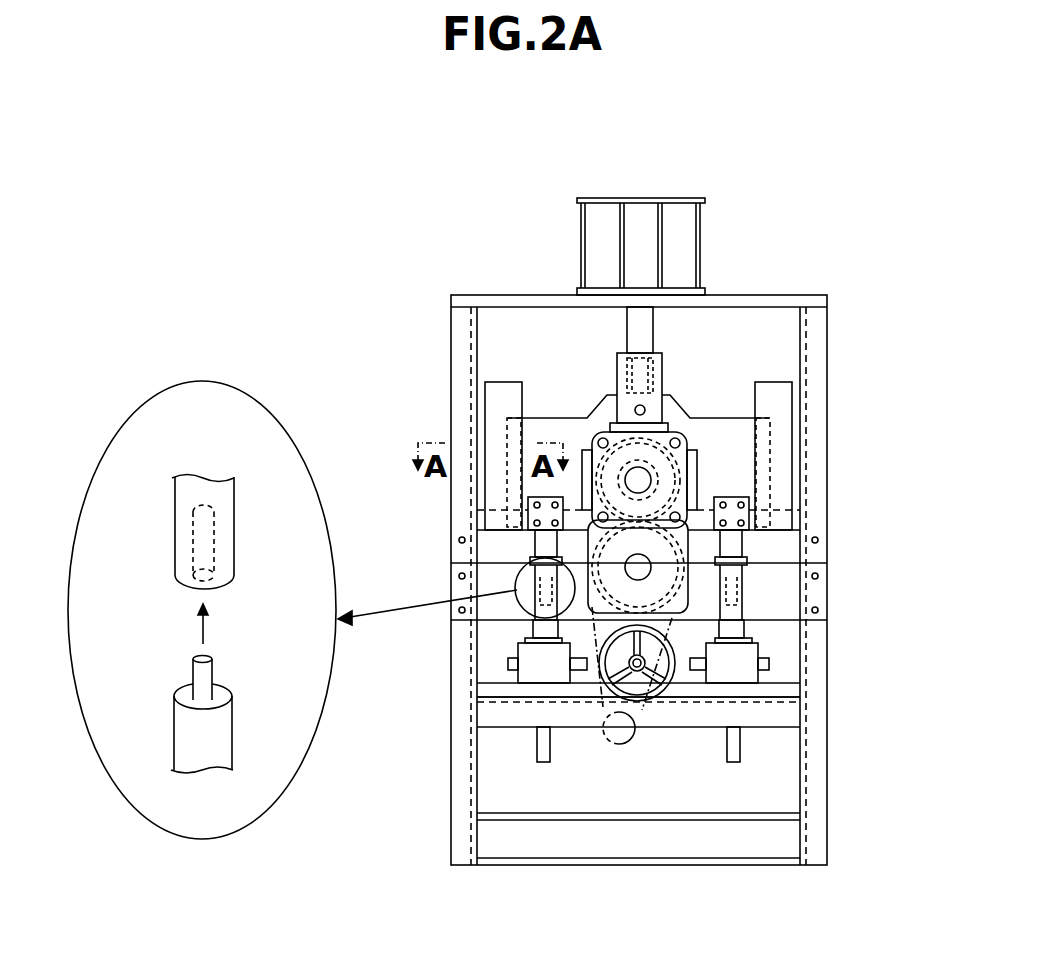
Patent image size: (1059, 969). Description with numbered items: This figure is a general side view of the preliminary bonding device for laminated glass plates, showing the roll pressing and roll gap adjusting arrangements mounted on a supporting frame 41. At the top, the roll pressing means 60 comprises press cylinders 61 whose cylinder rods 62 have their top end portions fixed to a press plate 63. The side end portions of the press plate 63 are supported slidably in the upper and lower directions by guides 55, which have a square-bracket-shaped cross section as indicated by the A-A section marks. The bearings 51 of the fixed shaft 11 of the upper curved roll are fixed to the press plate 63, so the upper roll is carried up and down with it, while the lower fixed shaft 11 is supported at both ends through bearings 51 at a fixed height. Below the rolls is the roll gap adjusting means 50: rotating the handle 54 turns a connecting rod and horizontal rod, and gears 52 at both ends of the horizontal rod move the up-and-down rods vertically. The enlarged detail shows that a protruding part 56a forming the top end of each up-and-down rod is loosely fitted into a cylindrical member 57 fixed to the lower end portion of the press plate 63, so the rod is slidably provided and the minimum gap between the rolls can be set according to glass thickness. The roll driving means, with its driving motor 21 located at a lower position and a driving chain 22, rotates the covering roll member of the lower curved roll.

The fixed shaft 11 is at (637, 567).
The driving motor 21 is at (615, 740).
The driving chain 22 is at (600, 714).
The supporting frame 41 is at (810, 797).
The roll gap adjusting means 50 is at (677, 567).
The bearing 51 is at (667, 573).
The gear 52 is at (737, 660).
The handle 54 is at (751, 694).
The guide 55 is at (500, 398).
The protruding part 56a is at (197, 668).
The cylindrical member 57 is at (182, 540).
The roll pressing means 60 is at (706, 253).
The press cylinder 61 is at (648, 242).
The cylinder rod 62 is at (653, 332).
The press plate 63 is at (710, 437).